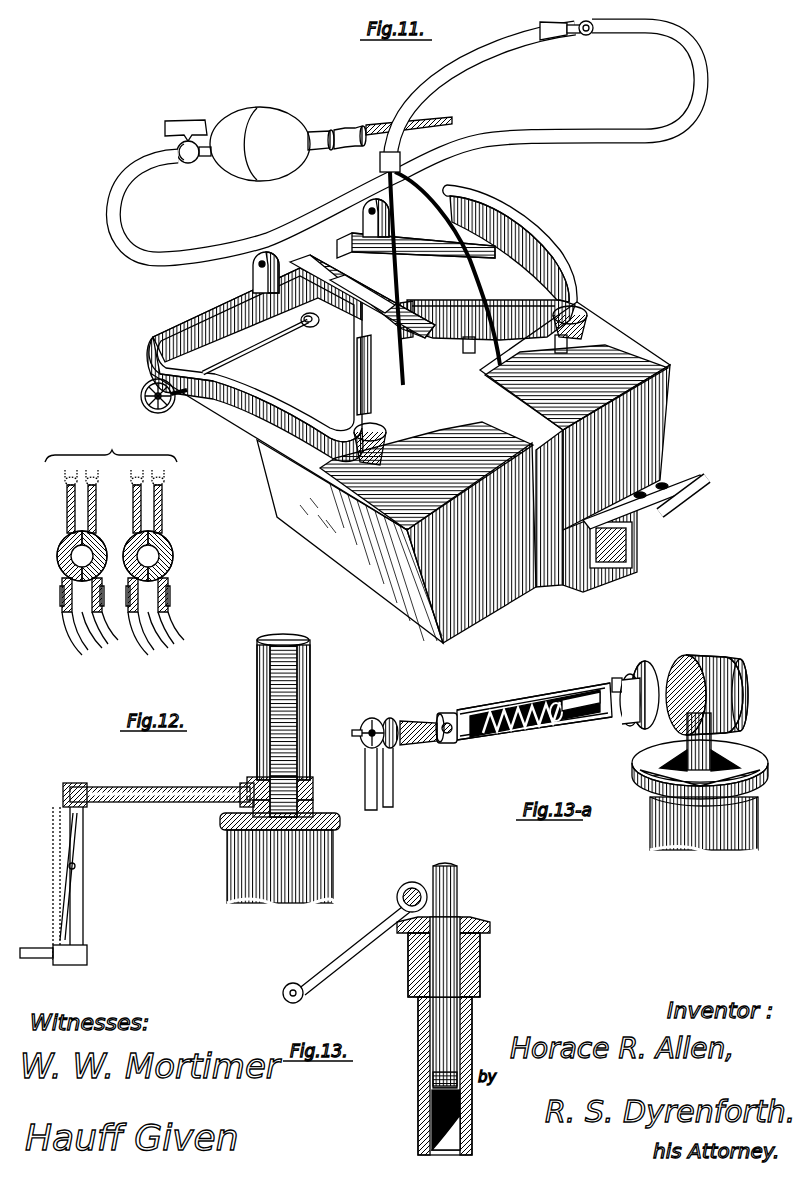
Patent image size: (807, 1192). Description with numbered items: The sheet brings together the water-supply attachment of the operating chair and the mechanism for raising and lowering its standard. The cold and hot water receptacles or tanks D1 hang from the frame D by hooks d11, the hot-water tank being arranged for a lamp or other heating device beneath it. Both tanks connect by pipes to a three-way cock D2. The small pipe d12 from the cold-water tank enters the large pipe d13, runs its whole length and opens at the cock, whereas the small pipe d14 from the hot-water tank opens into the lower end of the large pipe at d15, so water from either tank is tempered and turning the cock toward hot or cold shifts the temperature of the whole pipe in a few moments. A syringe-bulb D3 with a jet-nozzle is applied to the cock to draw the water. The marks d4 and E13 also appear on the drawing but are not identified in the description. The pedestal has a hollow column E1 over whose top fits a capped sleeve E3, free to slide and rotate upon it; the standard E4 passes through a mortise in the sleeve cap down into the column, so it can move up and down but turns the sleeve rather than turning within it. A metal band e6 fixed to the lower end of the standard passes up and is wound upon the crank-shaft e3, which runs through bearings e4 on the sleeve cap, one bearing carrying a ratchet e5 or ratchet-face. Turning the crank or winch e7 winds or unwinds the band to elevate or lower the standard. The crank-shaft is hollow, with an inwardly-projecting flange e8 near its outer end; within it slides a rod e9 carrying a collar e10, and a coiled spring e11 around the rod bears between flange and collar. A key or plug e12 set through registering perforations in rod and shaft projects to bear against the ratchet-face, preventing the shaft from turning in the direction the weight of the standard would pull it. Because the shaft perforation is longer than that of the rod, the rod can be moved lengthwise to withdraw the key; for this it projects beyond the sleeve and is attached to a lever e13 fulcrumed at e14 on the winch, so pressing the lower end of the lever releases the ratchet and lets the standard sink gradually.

In FIG. 11, the frame D is at (341, 455).
In FIG. 11, the cold and hot water receptacles or tanks D1 is at (557, 388).
In FIG. 11, the three-way cock D2 is at (165, 243).
In FIG. 11, the syringe-bulb D3 is at (331, 144).
In FIG. 11, the axle rod with wheel d4 is at (230, 363).
In FIG. 11, the hooks d11 is at (505, 293).
In FIG. 11, the small pipe d12 is at (400, 256).
In FIG. 11, the large pipe d13 is at (525, 38).
In FIG. 11, the small pipe d14 is at (430, 272).
In FIG. 11, the opening of hot-water pipe into large pipe d15 is at (380, 160).
In FIG. 13, the hollow column E1 is at (466, 1028).
In FIG. 13A, the capped sleeve E3 is at (697, 840).
In FIG. 12, the standard E4 is at (300, 680).
In FIG. 13, the standard E4 is at (467, 882).
In FIG. 12, the flange collar E13 is at (270, 898).
In FIG. 13, the flange collar E13 is at (485, 932).
In FIG. 12, the crank-shaft e3 is at (158, 802).
In FIG. 13A, the crank-shaft e3 is at (534, 711).
In FIG. 13, the crank-shaft e3 is at (408, 885).
In FIG. 13A, the bearings e4 is at (660, 672).
In FIG. 13A, the ratchet e5 is at (625, 722).
In FIG. 13A, the metal band e6 is at (700, 742).
In FIG. 13, the metal band e6 is at (423, 1015).
In FIG. 12, the crank or winch e7 is at (63, 886).
In FIG. 13A, the crank or winch e7 is at (394, 787).
In FIG. 13, the crank or winch e7 is at (303, 993).
In FIG. 13A, the inwardly-projecting flange e8 is at (455, 710).
In FIG. 13A, the rod e9 is at (524, 730).
In FIG. 13A, the collar e10 is at (572, 695).
In FIG. 13A, the coiled spring e11 is at (530, 700).
In FIG. 13A, the key or plug e12 is at (617, 678).
In FIG. 12, the lever e13 is at (62, 905).
In FIG. 13A, the lever e13 is at (372, 780).
In FIG. 12, the fulcrum e14 is at (75, 867).